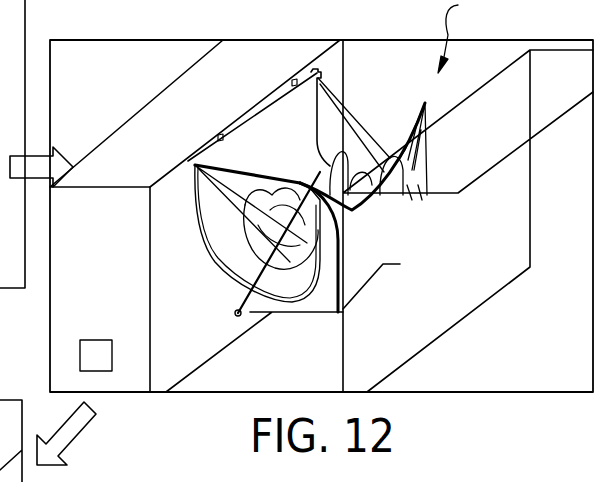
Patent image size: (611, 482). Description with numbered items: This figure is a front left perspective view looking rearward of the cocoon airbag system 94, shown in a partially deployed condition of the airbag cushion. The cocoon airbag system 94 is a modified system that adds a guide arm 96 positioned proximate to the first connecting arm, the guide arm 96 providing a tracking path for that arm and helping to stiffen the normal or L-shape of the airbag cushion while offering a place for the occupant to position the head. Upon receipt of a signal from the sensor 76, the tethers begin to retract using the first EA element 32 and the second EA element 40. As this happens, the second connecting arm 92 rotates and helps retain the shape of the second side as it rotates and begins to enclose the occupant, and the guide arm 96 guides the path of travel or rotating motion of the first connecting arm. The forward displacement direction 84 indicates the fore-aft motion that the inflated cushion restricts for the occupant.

The first EA element 32 is at (195, 165).
The second EA element 40 is at (312, 72).
The sensor 76 is at (108, 367).
The forward displacement direction 84 is at (238, 276).
The second connecting arm 92 is at (413, 128).
The cocoon airbag system 94 is at (462, 36).
The guide arm 96 is at (245, 172).